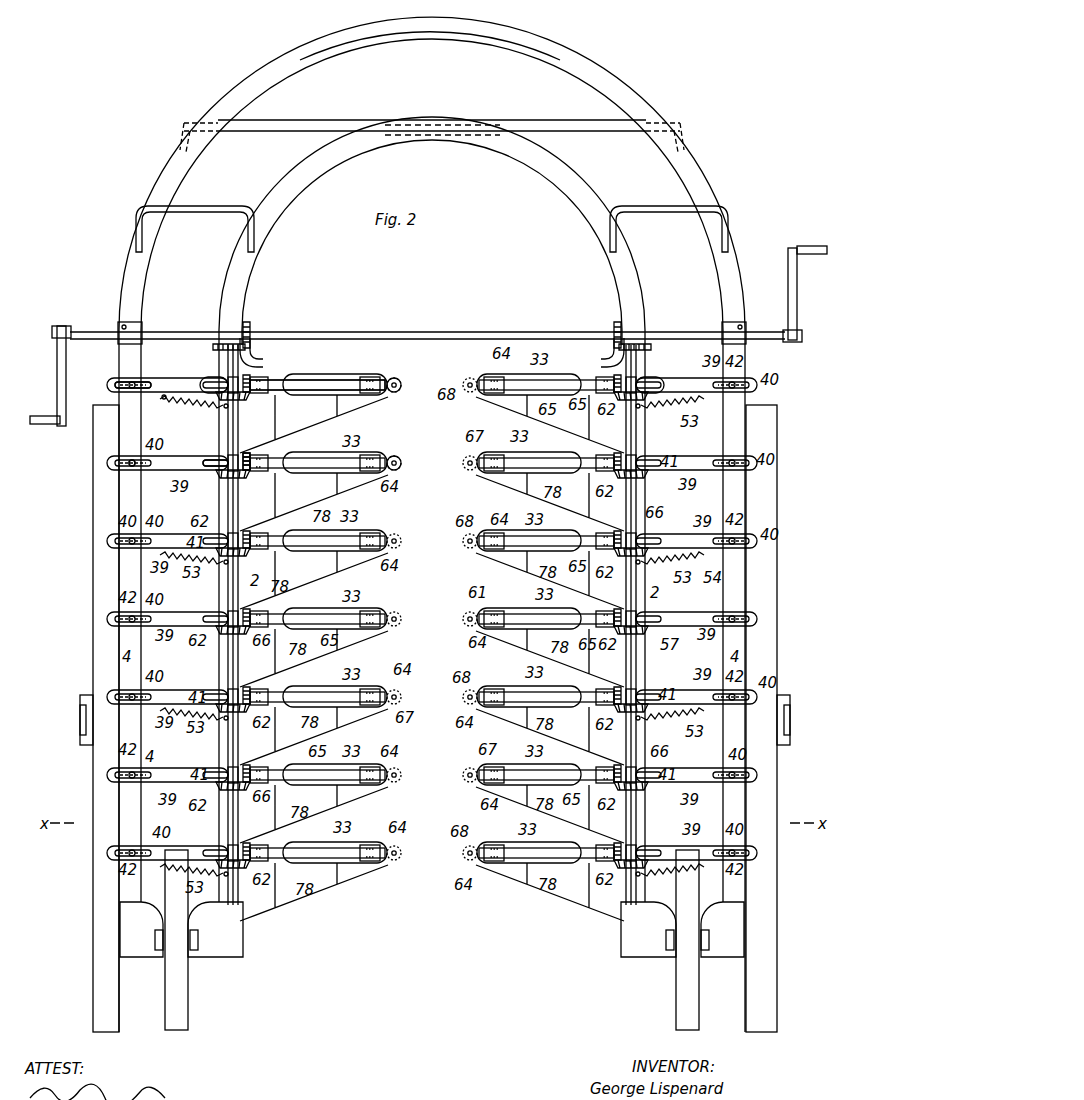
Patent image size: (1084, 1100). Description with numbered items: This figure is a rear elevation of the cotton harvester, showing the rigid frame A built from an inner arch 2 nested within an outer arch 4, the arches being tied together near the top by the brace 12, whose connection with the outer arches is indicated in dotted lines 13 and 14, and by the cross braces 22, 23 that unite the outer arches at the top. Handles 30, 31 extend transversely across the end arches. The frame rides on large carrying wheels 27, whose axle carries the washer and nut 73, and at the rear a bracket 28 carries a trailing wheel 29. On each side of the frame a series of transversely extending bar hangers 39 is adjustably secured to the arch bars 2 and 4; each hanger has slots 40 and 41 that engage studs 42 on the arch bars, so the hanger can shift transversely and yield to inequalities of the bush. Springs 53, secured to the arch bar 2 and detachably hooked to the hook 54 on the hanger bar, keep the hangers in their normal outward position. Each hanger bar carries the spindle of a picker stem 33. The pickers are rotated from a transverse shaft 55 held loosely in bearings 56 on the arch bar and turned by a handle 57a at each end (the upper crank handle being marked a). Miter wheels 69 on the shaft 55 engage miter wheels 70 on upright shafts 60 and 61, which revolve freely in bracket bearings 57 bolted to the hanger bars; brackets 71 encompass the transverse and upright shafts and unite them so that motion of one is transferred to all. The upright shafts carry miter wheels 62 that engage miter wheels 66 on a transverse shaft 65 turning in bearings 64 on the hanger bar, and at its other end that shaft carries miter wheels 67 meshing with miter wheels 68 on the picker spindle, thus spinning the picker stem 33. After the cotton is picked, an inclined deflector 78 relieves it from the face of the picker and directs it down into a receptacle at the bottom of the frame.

The inner arch 2 is at (572, 190).
The outer arch 4 is at (497, 40).
The frame A is at (430, 49).
The brace 12 is at (262, 132).
The dotted-line connection 13 is at (676, 136).
The dotted-line connection 14 is at (182, 138).
The cross brace 22 is at (533, 124).
The cross brace 23 is at (312, 120).
The carrying wheel 27 is at (92, 612).
The bracket 28 is at (432, 929).
The trailing wheel 29 is at (188, 988).
The handle 30 is at (215, 212).
The handle 31 is at (690, 212).
The picker stem 33 is at (345, 378).
The bar hanger 39 is at (167, 386).
The slot 40 is at (136, 388).
The slot 41 is at (210, 463).
The stud 42 is at (132, 460).
The spring 53 is at (205, 405).
The hook 54 is at (162, 399).
The transverse shaft 55 is at (425, 336).
The bearing 56 is at (140, 324).
The bracket bearing 57 is at (208, 380).
The handle 57a is at (62, 372).
The right crank handle a is at (790, 322).
The upright shaft 60 is at (240, 507).
The upright shaft 61 is at (638, 437).
The miter wheel 62 is at (240, 400).
The bearing 64 is at (388, 394).
The transverse shaft 65 is at (318, 385).
The miter wheel 66 is at (249, 472).
The miter wheel 67 is at (396, 380).
The miter wheel 68 is at (402, 463).
The miter wheel 69 is at (250, 326).
The miter wheel 70 is at (222, 342).
The bracket 71 is at (260, 362).
The washer and nut 73 is at (80, 706).
The deflector 78 is at (312, 422).